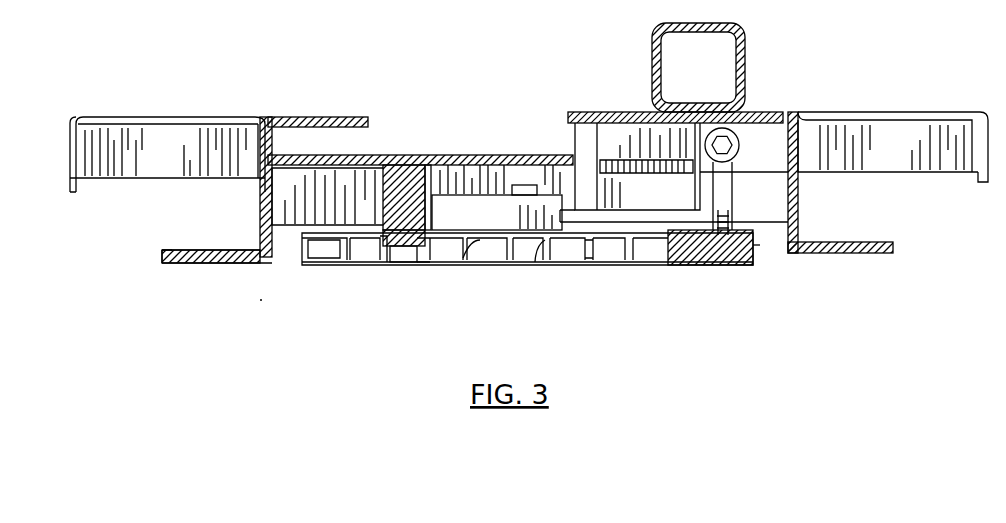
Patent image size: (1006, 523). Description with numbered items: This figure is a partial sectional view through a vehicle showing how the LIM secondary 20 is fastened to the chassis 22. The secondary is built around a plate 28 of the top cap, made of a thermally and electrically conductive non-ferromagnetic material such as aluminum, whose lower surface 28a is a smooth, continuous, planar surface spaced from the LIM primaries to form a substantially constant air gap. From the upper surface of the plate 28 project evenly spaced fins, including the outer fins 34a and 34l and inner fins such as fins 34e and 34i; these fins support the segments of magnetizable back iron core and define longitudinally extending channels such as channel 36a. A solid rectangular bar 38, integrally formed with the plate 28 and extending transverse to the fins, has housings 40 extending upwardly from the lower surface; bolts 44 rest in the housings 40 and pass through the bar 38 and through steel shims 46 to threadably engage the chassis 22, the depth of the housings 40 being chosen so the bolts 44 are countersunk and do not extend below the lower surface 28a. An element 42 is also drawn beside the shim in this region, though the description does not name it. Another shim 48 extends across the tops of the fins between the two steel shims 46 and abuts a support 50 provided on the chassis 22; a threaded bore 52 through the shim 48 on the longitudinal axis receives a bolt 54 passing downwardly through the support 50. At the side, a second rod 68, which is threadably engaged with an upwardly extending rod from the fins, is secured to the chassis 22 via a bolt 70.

The LIM secondary 20 is at (277, 321).
The chassis 22 is at (167, 104).
The plate 28 is at (668, 267).
The lower surface 28a is at (595, 267).
The fin 34a is at (302, 250).
The fin 34e is at (475, 268).
The fin 34i is at (622, 240).
The fin 34l is at (753, 245).
The channel 36a is at (328, 267).
The solid rectangular bar 38 is at (382, 268).
The housing 40 is at (416, 268).
The spring 42 is at (428, 210).
The bolt 44 is at (404, 268).
The steel shim 46 is at (392, 225).
The shim 48 is at (560, 185).
The support 50 is at (468, 195).
The threaded bore 52 is at (540, 268).
The bolt 54 is at (523, 185).
The second rod 68 is at (735, 198).
The bolt 70 is at (725, 135).